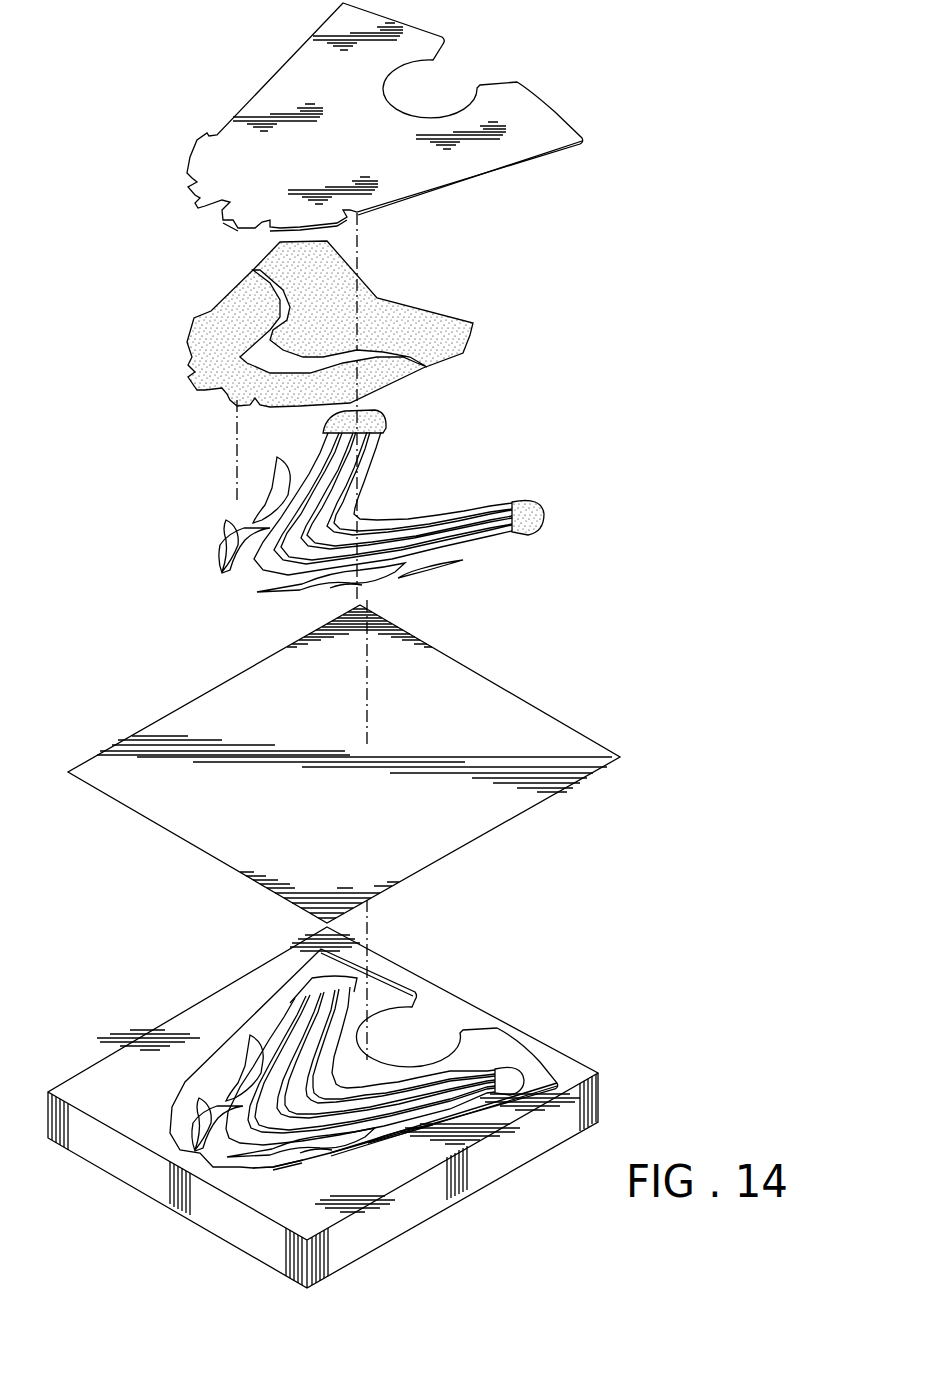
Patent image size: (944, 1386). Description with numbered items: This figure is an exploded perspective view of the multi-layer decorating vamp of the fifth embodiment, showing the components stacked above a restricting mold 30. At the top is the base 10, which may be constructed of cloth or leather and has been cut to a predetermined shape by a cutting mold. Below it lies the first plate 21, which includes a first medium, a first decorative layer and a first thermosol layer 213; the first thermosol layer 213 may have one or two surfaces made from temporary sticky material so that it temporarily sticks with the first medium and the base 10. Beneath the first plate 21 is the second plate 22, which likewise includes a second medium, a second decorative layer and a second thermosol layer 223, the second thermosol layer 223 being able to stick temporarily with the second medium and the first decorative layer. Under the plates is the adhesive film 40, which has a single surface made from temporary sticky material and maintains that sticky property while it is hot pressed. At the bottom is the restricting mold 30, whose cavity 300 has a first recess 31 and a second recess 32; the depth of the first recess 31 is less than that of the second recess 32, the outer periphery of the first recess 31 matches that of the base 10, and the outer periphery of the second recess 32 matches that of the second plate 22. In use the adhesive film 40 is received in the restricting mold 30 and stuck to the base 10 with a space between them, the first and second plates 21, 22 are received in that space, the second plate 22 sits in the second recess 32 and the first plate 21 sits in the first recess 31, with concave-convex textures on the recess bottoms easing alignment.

The base 10 is at (555, 132).
The first plate 21 is at (372, 308).
The first thermosol layer 213 is at (390, 318).
The second plate 22 is at (404, 491).
The second thermosol layer 223 is at (383, 417).
The adhesive film 40 is at (492, 817).
The restricting mold 30 is at (323, 1112).
The cavity 300 is at (475, 1038).
The first recess 31 is at (533, 1092).
The second recess 32 is at (316, 1172).